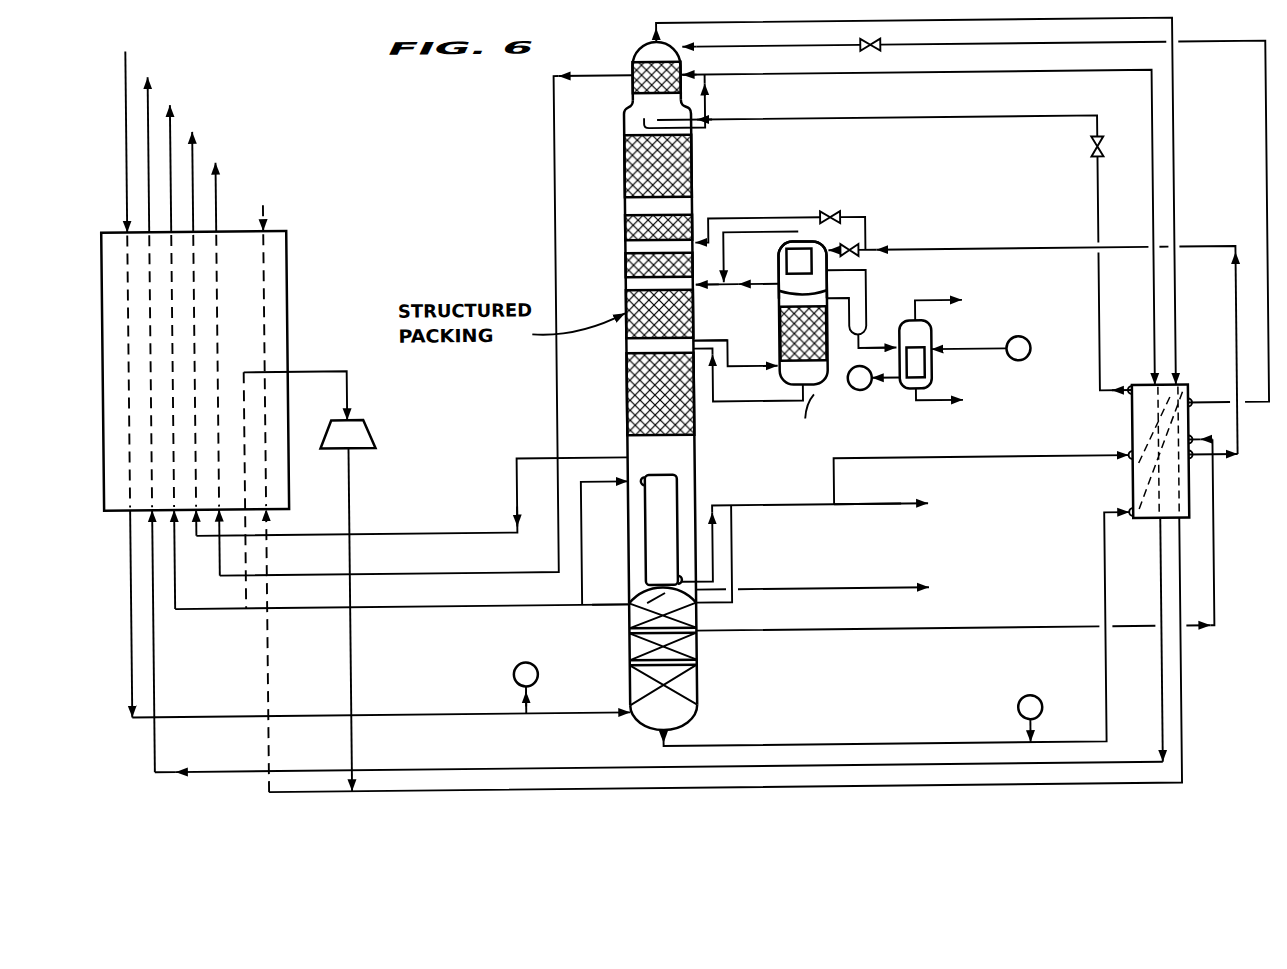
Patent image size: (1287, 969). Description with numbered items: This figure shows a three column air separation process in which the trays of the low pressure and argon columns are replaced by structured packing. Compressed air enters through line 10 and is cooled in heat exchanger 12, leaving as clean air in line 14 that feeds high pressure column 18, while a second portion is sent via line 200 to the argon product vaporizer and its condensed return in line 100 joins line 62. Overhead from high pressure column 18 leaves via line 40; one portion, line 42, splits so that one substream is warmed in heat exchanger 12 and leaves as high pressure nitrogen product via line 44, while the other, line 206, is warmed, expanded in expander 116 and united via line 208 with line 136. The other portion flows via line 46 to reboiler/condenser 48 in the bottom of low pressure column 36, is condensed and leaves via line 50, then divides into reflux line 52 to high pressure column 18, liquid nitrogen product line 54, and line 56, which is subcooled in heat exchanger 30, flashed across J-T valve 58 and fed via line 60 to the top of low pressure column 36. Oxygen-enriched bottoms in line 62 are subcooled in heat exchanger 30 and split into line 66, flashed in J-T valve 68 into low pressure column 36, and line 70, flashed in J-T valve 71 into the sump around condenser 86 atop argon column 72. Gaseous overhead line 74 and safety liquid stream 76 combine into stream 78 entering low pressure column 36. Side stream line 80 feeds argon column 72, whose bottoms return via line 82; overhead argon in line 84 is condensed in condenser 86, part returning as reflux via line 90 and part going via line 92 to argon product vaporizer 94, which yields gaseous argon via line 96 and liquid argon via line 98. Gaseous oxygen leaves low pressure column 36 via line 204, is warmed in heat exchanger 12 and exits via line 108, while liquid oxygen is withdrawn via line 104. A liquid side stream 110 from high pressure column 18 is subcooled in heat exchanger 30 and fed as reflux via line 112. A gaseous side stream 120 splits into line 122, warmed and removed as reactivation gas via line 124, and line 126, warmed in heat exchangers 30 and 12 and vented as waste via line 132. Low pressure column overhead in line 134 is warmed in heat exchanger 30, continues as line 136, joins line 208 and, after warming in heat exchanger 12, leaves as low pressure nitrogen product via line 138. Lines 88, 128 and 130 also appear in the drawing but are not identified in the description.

The line 10 is at (127, 90).
The heat exchanger 12 is at (256, 304).
The line 14 is at (219, 712).
The high pressure column 18 is at (698, 700).
The heat exchanger 30 is at (1128, 484).
The low pressure column 36 is at (696, 190).
The line 40 is at (600, 606).
The line 42 is at (508, 601).
The line 44 is at (171, 166).
The line 46 is at (582, 514).
The reboiler/condenser 48 is at (673, 531).
The line 50 is at (727, 503).
The line 52 is at (737, 532).
The line 54 is at (860, 505).
The line 56 is at (993, 460).
The J-T valve 58 is at (884, 52).
The line 60 is at (729, 47).
The line 62 is at (733, 747).
The line 66 is at (877, 246).
The J-T valve 68 is at (848, 217).
The line 70 is at (862, 258).
The J-T valve 71 is at (852, 246).
The argon column 72 is at (811, 387).
The line 74 is at (727, 272).
The liquid stream 76 is at (711, 288).
The combined stream 78 is at (728, 340).
The line 80 is at (733, 345).
The line 82 is at (766, 402).
The line 84 is at (779, 300).
The condenser 86 is at (781, 240).
The argon reflux loop 88 is at (868, 300).
The line 90 is at (865, 342).
The line 92 is at (870, 349).
The argon product vaporizer 94 is at (933, 325).
The line 96 is at (930, 303).
The line 98 is at (942, 402).
The line 100 is at (1050, 712).
The line 104 is at (845, 590).
The line 108 is at (193, 190).
The line 110 is at (787, 628).
The line 112 is at (908, 119).
The expander 116 is at (334, 442).
The line 120 is at (709, 131).
The line 122 is at (548, 118).
The line 124 is at (219, 204).
The line 126 is at (1010, 80).
The waste nitrogen line from subcooler 128 is at (1158, 552).
The waste stream return line 130 is at (187, 766).
The line 132 is at (150, 128).
The line 134 is at (842, 24).
The line 136 is at (1188, 662).
The line 138 is at (264, 220).
The line 200 is at (529, 702).
The line 204 is at (603, 452).
The line 206 is at (243, 594).
The line 208 is at (355, 741).